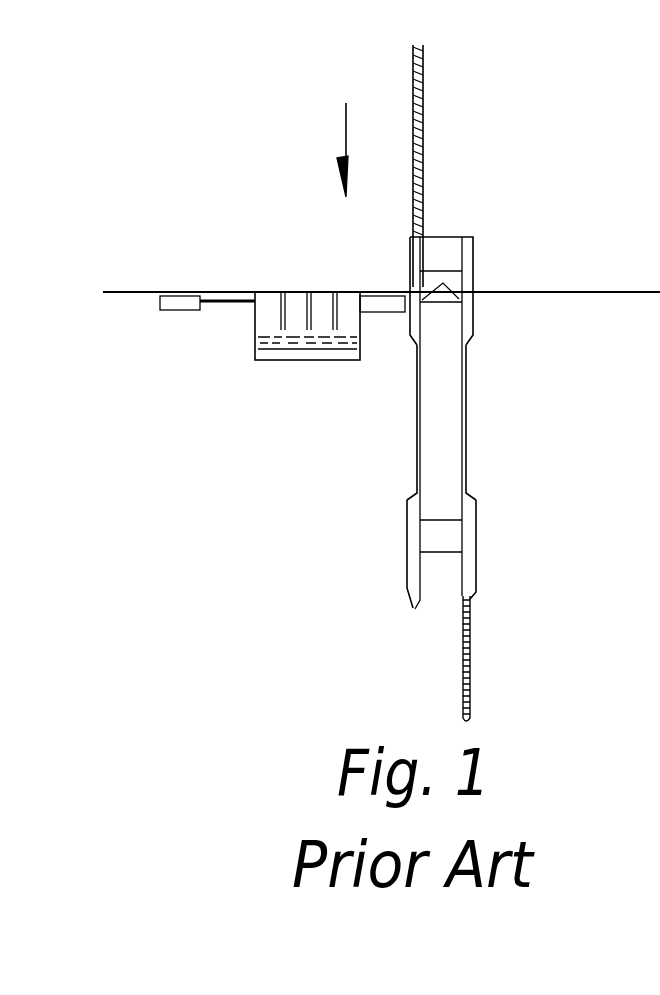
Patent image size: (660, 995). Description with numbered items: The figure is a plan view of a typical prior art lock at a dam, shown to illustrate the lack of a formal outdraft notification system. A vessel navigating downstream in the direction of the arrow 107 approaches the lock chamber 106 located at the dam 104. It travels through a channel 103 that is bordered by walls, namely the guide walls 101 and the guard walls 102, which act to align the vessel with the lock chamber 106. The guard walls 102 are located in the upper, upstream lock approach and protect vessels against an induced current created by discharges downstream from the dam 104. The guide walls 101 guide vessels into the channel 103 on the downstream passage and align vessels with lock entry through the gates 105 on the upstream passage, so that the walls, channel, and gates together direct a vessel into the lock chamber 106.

The guide walls 101 is at (484, 650).
The guard walls 102 is at (428, 95).
The channel 103 is at (466, 202).
The dam 104 is at (325, 362).
The gates 105 is at (430, 540).
The lock chamber 106 is at (472, 400).
The arrow 107 is at (338, 132).